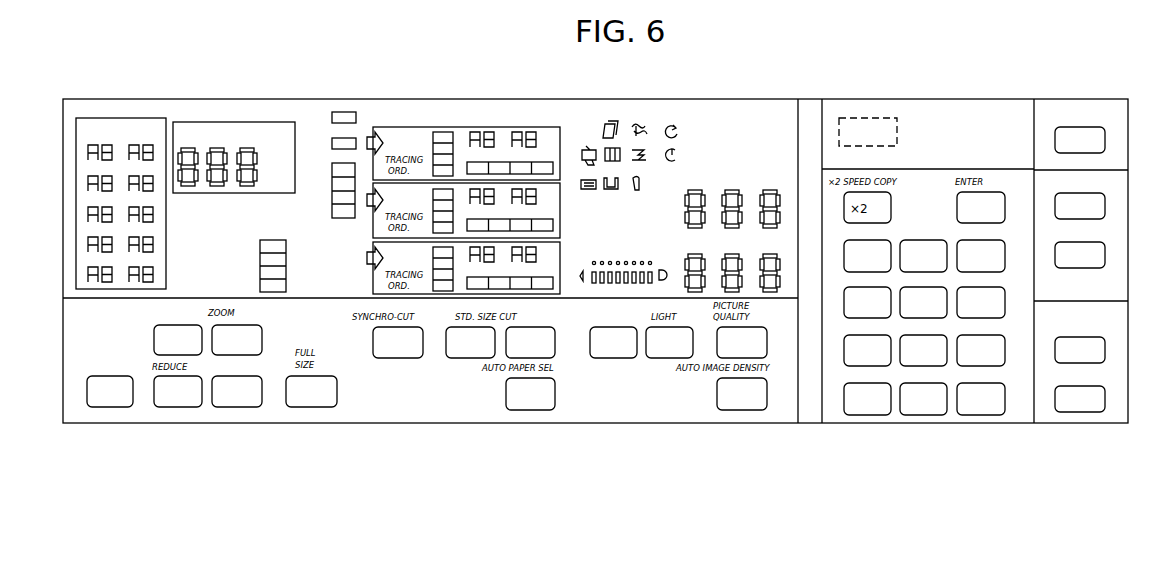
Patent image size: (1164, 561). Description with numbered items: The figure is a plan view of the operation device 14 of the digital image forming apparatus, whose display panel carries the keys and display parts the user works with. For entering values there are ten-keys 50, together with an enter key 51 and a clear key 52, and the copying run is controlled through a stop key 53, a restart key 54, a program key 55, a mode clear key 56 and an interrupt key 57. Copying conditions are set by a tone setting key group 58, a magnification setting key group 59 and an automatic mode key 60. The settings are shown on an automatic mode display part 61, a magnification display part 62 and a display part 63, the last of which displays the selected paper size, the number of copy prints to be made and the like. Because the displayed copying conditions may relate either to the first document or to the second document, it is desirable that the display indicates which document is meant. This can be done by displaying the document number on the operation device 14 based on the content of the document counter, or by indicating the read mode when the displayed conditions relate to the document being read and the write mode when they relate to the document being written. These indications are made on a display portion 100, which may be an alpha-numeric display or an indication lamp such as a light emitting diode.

The operation device 14 is at (770, 99).
The ten-keys 50 is at (867, 415).
The enter key 51 is at (1005, 191).
The clear key 52 is at (985, 415).
The stop key 53 is at (1101, 347).
The restart key 54 is at (1101, 400).
The program key 55 is at (1101, 140).
The mode clear key 56 is at (1101, 205).
The interrupt key 57 is at (1101, 253).
The tone setting key group 58 is at (615, 355).
The magnification setting key group 59 is at (240, 407).
The automatic mode key 60 is at (109, 407).
The automatic mode display part 61 is at (119, 122).
The magnification display part 62 is at (246, 122).
The display part 63 is at (588, 128).
The display portion 100 is at (868, 116).